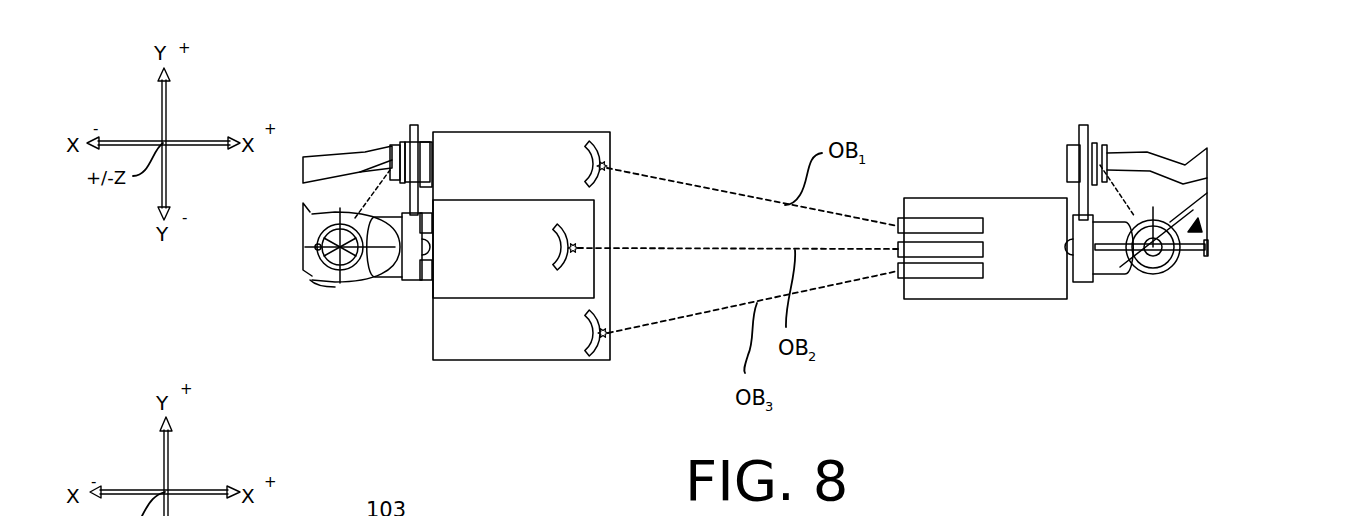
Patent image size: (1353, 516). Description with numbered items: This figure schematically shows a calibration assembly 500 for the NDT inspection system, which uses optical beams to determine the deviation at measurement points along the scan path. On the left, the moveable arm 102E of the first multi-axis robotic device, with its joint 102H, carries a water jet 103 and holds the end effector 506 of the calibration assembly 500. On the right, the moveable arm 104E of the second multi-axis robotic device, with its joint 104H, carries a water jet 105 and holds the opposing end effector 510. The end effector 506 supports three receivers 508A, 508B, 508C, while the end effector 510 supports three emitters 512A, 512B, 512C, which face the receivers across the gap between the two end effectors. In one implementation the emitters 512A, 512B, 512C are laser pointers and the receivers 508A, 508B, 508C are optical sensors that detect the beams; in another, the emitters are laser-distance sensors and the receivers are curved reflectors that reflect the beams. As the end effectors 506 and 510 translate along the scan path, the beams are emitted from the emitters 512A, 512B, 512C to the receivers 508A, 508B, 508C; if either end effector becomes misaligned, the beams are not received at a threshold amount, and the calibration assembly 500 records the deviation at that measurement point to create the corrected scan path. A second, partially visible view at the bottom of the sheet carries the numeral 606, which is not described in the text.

The water jet 103 is at (364, 150).
The water jet 105 is at (1110, 152).
The joint 102H is at (297, 260).
The moveable arm 102E is at (317, 281).
The joint 104H is at (1183, 263).
The moveable arm 104E is at (1192, 225).
The calibration assembly 500 is at (781, 115).
The end effector 506 is at (468, 132).
The receiver 508A is at (604, 156).
The receiver 508B is at (558, 242).
The receiver 508C is at (590, 342).
The end effector 510 is at (1000, 302).
The emitter 512A is at (916, 217).
The emitter 512B is at (916, 282).
The emitter 512C is at (945, 282).
The sensor housing 606 is at (494, 513).